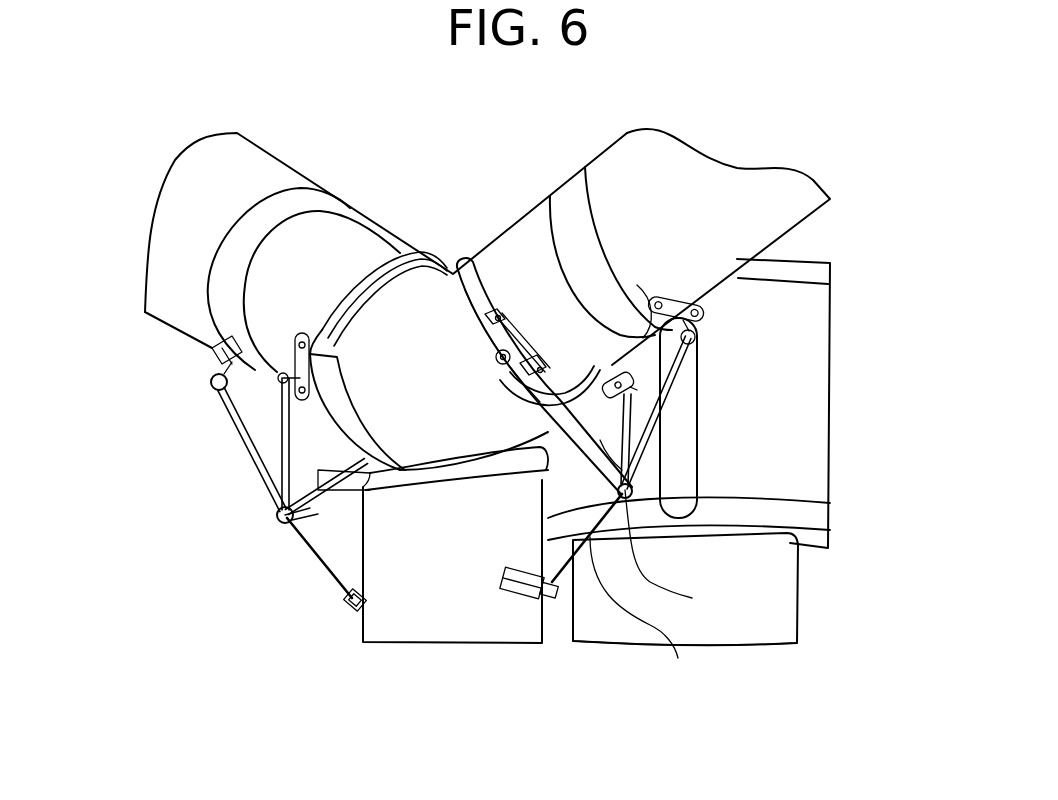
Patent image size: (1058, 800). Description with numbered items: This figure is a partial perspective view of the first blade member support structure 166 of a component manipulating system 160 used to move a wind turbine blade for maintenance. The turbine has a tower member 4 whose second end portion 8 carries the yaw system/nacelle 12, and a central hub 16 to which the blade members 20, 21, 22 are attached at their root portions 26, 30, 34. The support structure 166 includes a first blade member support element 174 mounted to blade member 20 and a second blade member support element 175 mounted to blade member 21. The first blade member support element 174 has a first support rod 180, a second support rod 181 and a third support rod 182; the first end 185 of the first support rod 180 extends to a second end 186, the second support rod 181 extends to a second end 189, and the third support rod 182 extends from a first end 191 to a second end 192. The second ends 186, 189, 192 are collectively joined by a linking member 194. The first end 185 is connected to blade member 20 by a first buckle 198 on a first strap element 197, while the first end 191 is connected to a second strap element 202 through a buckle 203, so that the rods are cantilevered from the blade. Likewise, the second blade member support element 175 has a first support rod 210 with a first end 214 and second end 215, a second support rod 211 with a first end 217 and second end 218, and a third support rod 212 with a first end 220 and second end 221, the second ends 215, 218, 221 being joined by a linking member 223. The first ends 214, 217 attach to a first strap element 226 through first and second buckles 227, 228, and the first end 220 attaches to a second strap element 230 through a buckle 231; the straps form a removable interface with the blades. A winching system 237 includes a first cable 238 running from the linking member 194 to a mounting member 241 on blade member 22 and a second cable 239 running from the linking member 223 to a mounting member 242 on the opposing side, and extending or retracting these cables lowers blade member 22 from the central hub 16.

The tower member 4 is at (705, 588).
The second end portion 8 is at (788, 585).
The yaw system/nacelle 12 is at (808, 412).
The central hub 16 is at (441, 439).
The blade member 20 is at (128, 186).
The blade member 21 is at (820, 146).
The blade member 22 is at (473, 576).
The root portion 26 is at (353, 230).
The root portion 30 is at (526, 247).
The root portion 34 is at (443, 525).
The component manipulating system 160 is at (229, 472).
The first blade member support structure 166 is at (203, 449).
The first blade member support element 174 is at (262, 501).
The second blade member support element 175 is at (688, 410).
The first support rod 180 is at (277, 444).
The second support rod 181 is at (348, 480).
The third support rod 182 is at (240, 438).
The first end 185 is at (280, 366).
The second end 186 is at (363, 528).
The second end 189 is at (360, 500).
The first end 191 is at (210, 380).
The second end 192 is at (276, 518).
The linking member 194 is at (292, 519).
The first strap element 197 is at (400, 245).
The first buckle 198 is at (338, 358).
The second strap element 202 is at (230, 233).
The buckle 203 is at (198, 342).
The first support rod 210 is at (565, 440).
The second support rod 211 is at (652, 450).
The third support rod 212 is at (700, 372).
The first end 214 is at (533, 358).
The second end 215 is at (613, 535).
The first end 217 is at (578, 392).
The second end 218 is at (640, 430).
The first end 220 is at (653, 310).
The second end 221 is at (670, 500).
The linking member 223 is at (678, 552).
The first strap element 226 is at (488, 275).
The first buckle 227 is at (485, 348).
The second buckle 228 is at (618, 368).
The second strap element 230 is at (600, 221).
The buckle 231 is at (692, 295).
The winching system 237 is at (708, 637).
The first cable 238 is at (320, 572).
The second cable 239 is at (642, 612).
The mounting member 241 is at (352, 608).
The mounting member 242 is at (517, 603).